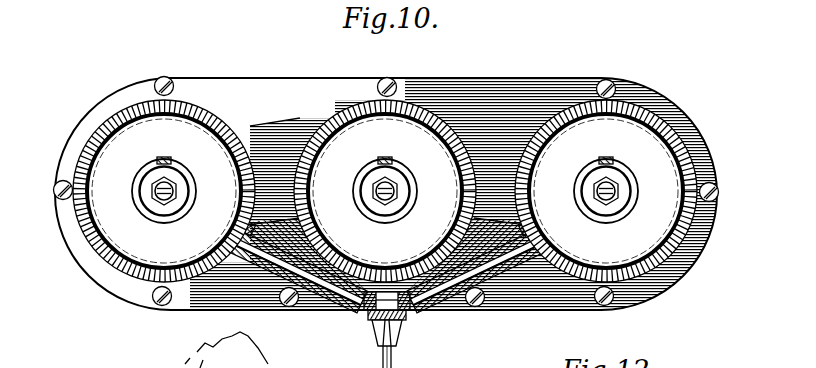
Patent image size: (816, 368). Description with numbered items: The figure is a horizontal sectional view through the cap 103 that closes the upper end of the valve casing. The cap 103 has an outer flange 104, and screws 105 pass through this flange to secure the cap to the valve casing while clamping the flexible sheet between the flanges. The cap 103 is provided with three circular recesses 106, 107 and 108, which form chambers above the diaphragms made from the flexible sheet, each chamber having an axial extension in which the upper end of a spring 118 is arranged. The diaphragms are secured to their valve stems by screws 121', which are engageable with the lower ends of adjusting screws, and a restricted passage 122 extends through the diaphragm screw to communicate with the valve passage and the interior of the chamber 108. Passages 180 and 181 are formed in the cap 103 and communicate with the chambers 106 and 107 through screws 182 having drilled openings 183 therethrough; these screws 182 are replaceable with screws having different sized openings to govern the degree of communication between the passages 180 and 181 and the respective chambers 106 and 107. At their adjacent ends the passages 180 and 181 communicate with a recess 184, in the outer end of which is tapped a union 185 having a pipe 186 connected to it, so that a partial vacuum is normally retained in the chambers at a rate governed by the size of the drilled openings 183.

The cap 103 is at (381, 206).
The outer flange 104 is at (245, 85).
The screws 105 is at (164, 80).
The circular recess 106 is at (110, 128).
The circular recess 107 is at (628, 128).
The circular recess 108 is at (458, 90).
The spring 118 is at (160, 160).
The screws 121' is at (410, 187).
The restricted passage 122 is at (380, 182).
The passage 180 is at (321, 298).
The passage 181 is at (452, 298).
The screws 182 is at (241, 219).
The drilled openings 183 is at (230, 233).
The recess 184 is at (383, 291).
The union 185 is at (398, 331).
The pipe 186 is at (383, 356).